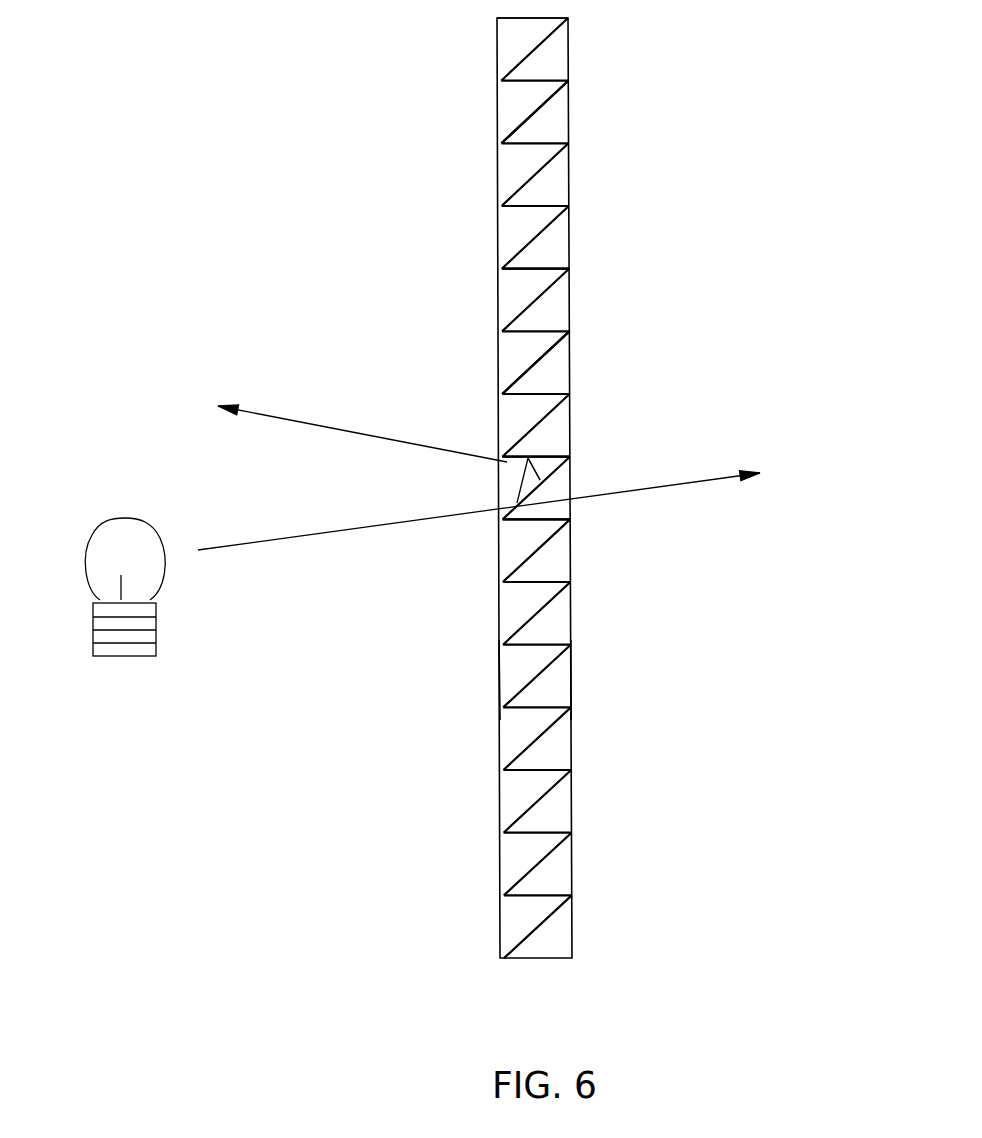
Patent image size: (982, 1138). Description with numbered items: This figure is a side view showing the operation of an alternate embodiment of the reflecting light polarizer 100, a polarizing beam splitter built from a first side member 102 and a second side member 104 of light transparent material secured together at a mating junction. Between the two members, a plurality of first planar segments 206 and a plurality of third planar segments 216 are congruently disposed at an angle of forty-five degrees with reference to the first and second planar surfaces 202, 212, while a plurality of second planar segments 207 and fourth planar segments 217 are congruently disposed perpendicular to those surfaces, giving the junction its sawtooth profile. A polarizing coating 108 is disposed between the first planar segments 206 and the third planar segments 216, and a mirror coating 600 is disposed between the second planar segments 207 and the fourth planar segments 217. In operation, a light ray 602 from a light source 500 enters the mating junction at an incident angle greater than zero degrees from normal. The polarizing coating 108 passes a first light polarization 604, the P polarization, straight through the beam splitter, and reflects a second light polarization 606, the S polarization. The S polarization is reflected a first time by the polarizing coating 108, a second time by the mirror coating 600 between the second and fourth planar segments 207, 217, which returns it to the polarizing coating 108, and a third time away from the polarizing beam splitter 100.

The reflecting light polarizer 100 is at (702, 245).
The first side member 102 is at (513, 168).
The second side member 104 is at (553, 120).
The polarizing coating 108 is at (515, 362).
The mirror coating 600 is at (518, 285).
The second light polarization 606 is at (325, 430).
The second planar segments 207 is at (503, 460).
The fourth planar segments 217 is at (547, 452).
The third planar segments 216 is at (565, 467).
The first planar segments 206 is at (502, 515).
The light ray 602 is at (298, 535).
The first light polarization 604 is at (695, 482).
The first planar surface 202 is at (500, 675).
The second planar surface 212 is at (575, 682).
The light source 500 is at (123, 650).